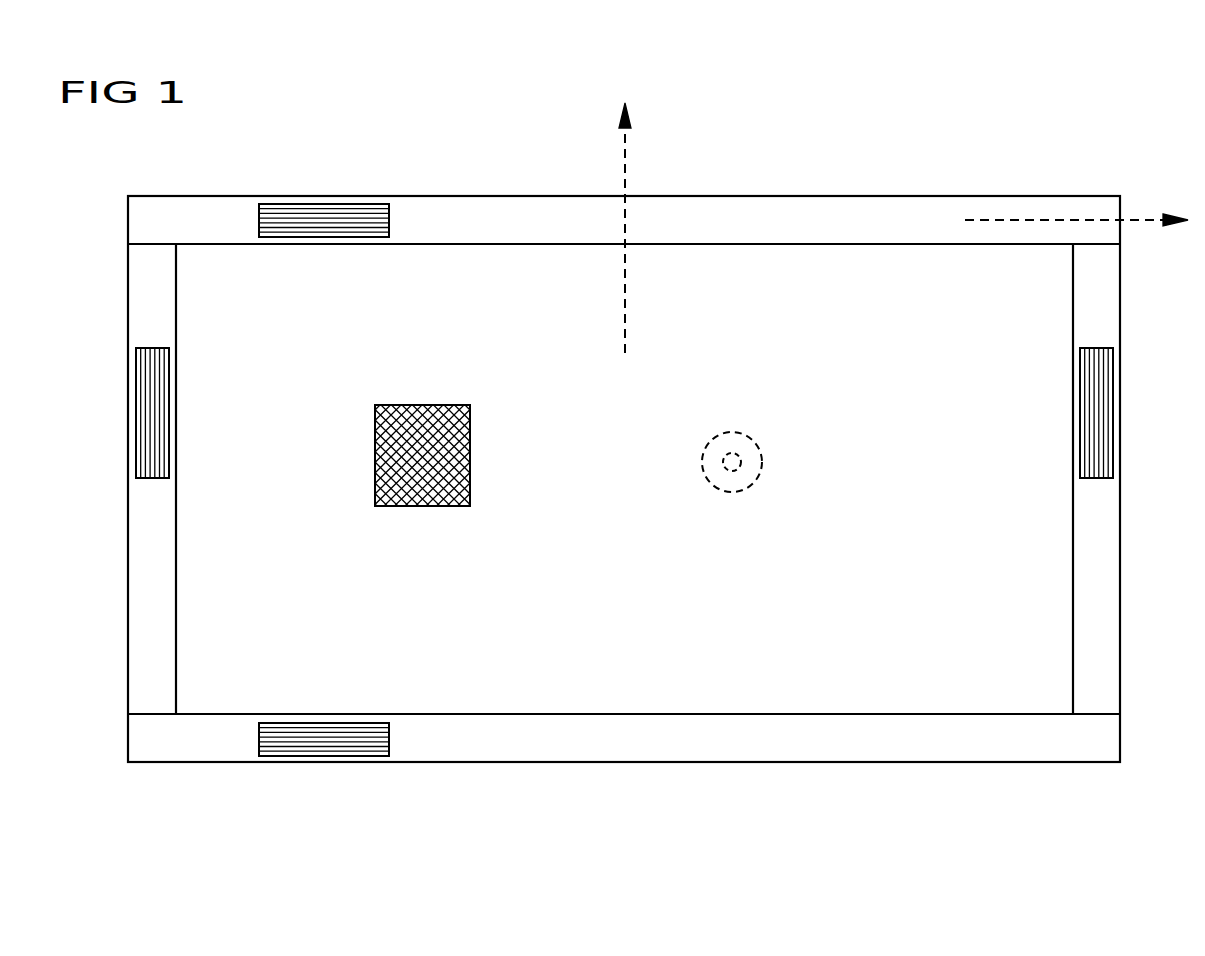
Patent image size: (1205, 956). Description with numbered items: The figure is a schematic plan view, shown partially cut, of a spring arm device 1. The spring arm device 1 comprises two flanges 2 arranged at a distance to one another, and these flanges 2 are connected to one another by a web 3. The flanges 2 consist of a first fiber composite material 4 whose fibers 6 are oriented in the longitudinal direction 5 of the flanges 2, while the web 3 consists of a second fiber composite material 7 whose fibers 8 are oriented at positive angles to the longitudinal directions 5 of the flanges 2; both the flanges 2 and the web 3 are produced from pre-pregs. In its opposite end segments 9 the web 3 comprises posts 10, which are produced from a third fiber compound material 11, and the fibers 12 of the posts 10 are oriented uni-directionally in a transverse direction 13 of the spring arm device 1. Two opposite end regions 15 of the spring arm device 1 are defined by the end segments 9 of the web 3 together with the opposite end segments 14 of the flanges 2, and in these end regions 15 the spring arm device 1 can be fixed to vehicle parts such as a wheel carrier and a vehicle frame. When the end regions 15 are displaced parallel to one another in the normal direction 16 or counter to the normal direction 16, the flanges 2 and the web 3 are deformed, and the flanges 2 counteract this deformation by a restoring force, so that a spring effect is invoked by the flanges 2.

The spring arm device 1 is at (1026, 131).
The flange 2 is at (845, 211).
The web 3 is at (767, 690).
The first fiber composite material 4 is at (293, 226).
The longitudinal direction 5 is at (1137, 218).
The fibers 6 is at (369, 212).
The second fiber composite material 7 is at (405, 478).
The fibers 8 is at (461, 425).
The end segment 9 is at (165, 293).
The post 10 is at (140, 513).
The third fiber compound material 11 is at (152, 393).
The fibers 12 is at (150, 447).
The transverse direction 13 is at (628, 163).
The end segment 14 is at (157, 227).
The end region 15 is at (185, 473).
The normal direction 16 is at (733, 456).